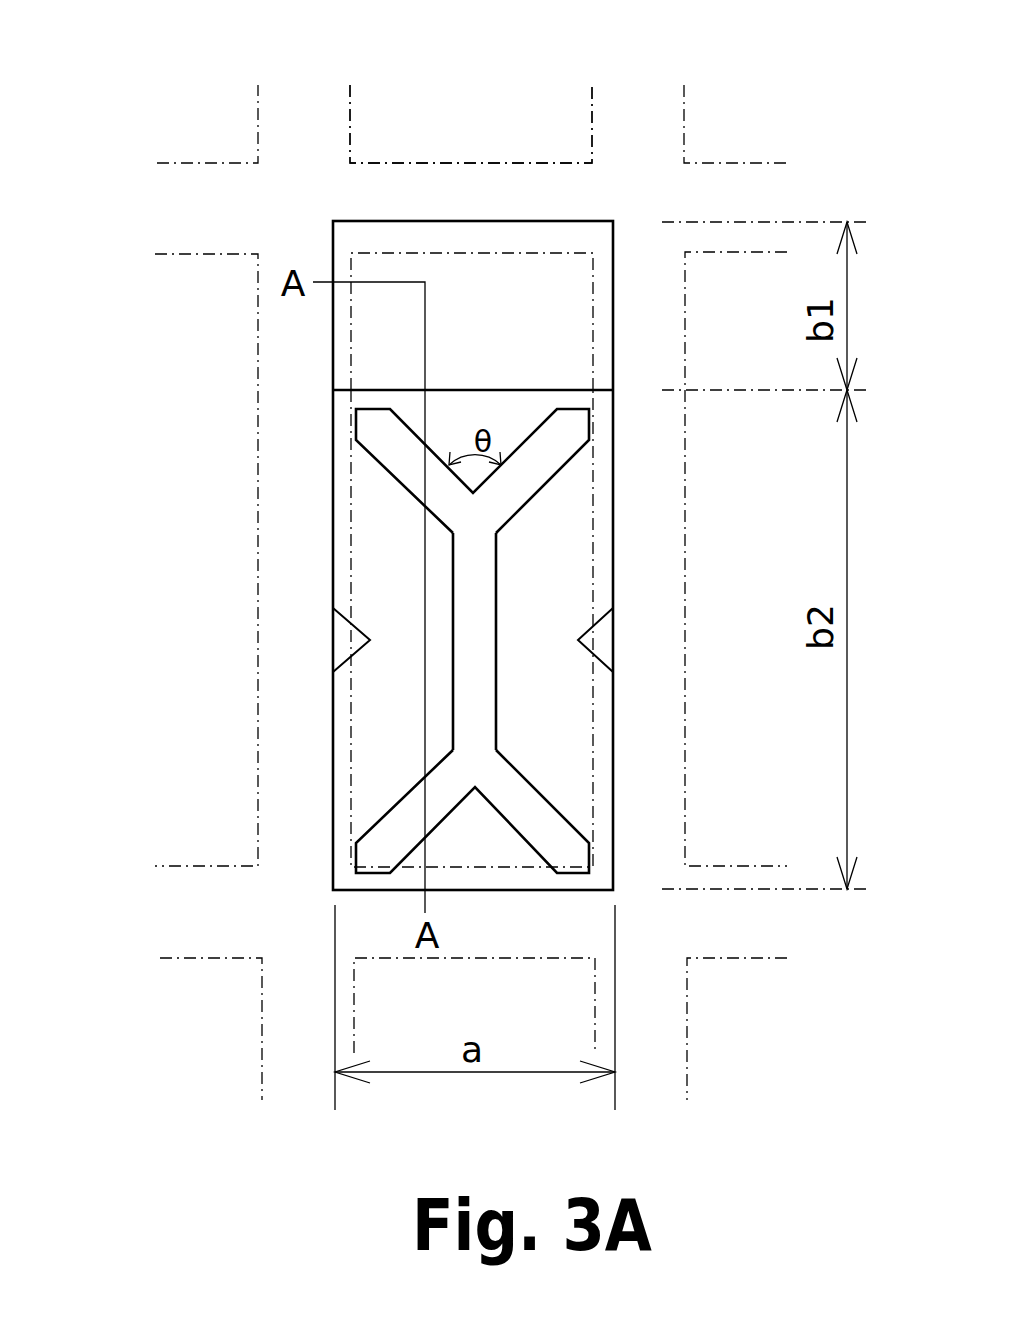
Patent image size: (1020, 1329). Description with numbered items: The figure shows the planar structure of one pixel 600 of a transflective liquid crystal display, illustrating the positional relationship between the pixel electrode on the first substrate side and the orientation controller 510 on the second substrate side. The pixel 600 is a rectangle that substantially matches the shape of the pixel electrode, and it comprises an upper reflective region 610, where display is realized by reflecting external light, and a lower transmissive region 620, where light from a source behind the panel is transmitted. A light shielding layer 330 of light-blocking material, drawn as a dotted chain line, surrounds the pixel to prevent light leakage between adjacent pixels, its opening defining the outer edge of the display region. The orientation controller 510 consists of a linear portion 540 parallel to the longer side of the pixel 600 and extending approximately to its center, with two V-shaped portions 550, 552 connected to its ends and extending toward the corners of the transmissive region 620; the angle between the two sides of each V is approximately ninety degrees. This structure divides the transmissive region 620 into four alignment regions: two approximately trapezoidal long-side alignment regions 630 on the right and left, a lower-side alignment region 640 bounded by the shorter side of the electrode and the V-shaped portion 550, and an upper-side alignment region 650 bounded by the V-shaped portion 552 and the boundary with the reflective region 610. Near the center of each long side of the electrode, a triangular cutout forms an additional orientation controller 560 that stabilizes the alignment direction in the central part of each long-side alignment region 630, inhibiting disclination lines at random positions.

The light shielding layer 330 is at (435, 163).
The orientation controller 510 is at (432, 641).
The linear portion 540 is at (483, 583).
The V-shaped portion 550 is at (527, 790).
The V-shaped portion 552 is at (527, 488).
The additional orientation controller 560 is at (335, 628).
The pixel 600 is at (331, 311).
The reflective region 610 is at (372, 357).
The transmissive region 620 is at (372, 503).
The long-side alignment region 630 is at (362, 600).
The lower-side alignment region 640 is at (437, 857).
The upper-side alignment region 650 is at (432, 425).